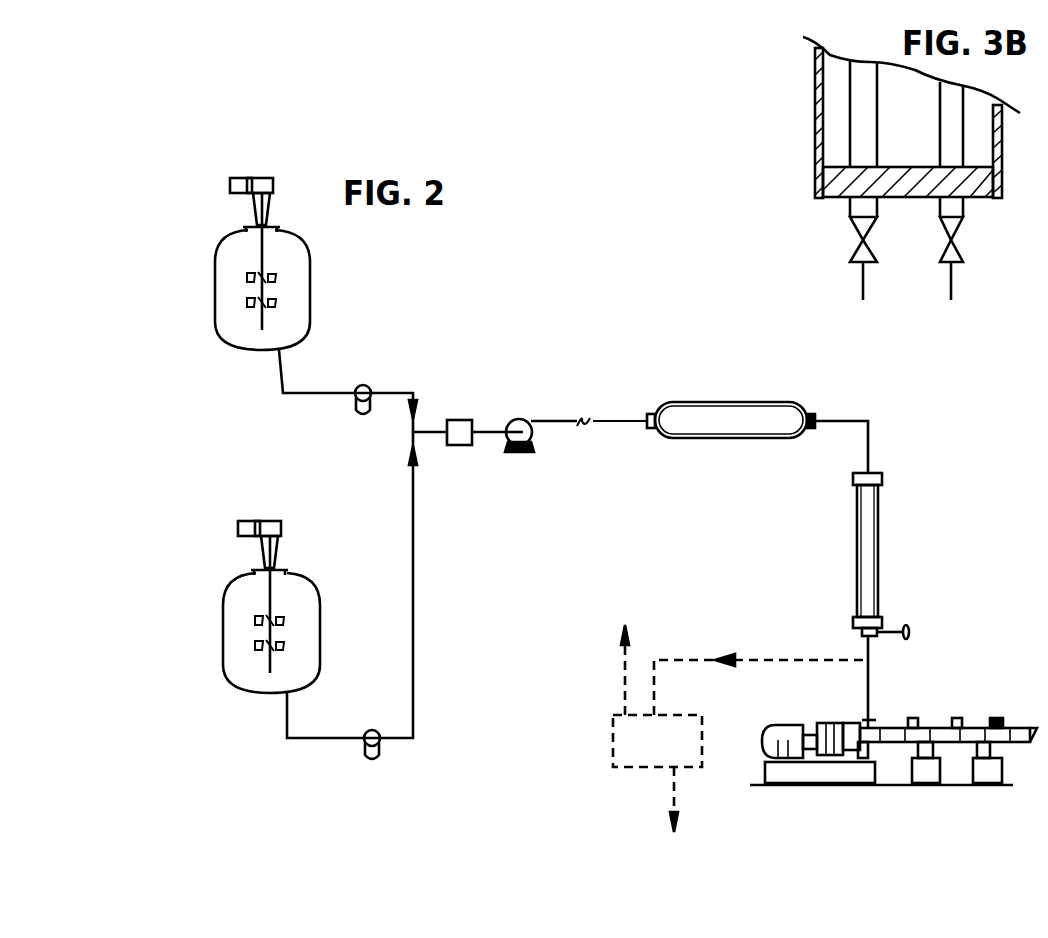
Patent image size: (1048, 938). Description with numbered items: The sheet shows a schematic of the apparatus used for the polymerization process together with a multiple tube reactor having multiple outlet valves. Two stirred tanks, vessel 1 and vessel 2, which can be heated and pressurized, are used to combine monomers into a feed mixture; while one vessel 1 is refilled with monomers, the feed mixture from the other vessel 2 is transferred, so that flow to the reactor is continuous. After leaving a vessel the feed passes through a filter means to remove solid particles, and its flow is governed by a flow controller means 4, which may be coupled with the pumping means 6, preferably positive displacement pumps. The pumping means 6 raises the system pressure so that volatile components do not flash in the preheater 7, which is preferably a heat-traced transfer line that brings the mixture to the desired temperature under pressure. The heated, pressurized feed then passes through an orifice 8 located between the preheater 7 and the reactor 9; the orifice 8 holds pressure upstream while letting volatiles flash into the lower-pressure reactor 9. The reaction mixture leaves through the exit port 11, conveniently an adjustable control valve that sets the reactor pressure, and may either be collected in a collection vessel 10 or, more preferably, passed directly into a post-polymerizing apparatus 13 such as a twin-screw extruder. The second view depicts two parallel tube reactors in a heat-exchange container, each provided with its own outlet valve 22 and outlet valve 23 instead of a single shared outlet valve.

In FIG. 2, the vessel 1 is at (228, 256).
In FIG. 2, the vessel 2 is at (233, 653).
In FIG. 2, the flow controller means 4 is at (458, 420).
In FIG. 2, the pumping means 6 is at (521, 420).
In FIG. 2, the preheater 7 is at (728, 418).
In FIG. 2, the orifice 8 is at (876, 473).
In FIG. 2, the reactor 9 is at (877, 550).
In FIG. 2, the collection vessel 10 is at (616, 742).
In FIG. 2, the exit port 11 is at (868, 632).
In FIG. 2, the post-polymerizing apparatus 13 is at (830, 723).
In FIG. 3B, the outlet valve 22 is at (850, 228).
In FIG. 3B, the outlet valve 23 is at (965, 245).